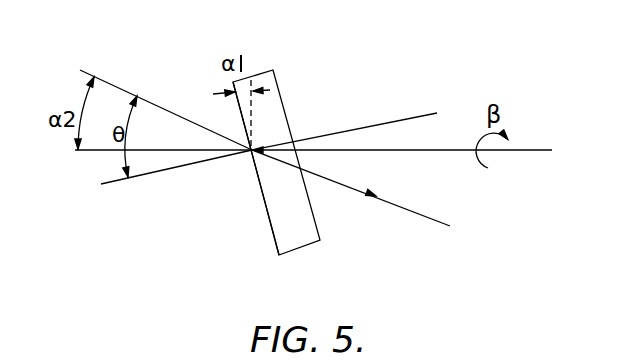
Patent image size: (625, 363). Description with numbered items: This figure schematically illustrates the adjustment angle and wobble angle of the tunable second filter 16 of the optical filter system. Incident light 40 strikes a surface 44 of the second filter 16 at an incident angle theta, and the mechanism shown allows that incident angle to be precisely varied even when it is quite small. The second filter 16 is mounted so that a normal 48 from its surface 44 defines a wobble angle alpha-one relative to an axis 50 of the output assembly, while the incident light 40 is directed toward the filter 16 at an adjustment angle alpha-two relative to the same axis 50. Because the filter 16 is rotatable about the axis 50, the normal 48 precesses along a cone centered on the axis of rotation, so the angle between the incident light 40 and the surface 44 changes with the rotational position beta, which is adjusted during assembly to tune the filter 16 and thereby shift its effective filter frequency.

The second filter 16 is at (305, 247).
The incident light 40 is at (82, 72).
The surface 44 is at (273, 242).
The normal 48 is at (393, 117).
The axis 50 is at (539, 152).